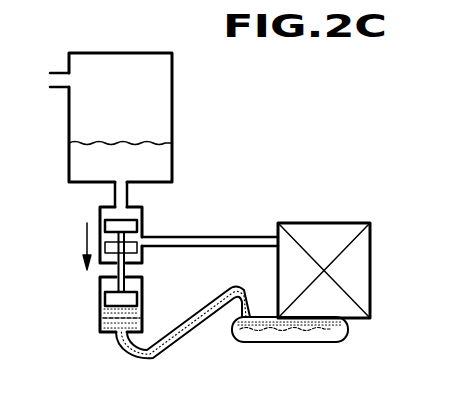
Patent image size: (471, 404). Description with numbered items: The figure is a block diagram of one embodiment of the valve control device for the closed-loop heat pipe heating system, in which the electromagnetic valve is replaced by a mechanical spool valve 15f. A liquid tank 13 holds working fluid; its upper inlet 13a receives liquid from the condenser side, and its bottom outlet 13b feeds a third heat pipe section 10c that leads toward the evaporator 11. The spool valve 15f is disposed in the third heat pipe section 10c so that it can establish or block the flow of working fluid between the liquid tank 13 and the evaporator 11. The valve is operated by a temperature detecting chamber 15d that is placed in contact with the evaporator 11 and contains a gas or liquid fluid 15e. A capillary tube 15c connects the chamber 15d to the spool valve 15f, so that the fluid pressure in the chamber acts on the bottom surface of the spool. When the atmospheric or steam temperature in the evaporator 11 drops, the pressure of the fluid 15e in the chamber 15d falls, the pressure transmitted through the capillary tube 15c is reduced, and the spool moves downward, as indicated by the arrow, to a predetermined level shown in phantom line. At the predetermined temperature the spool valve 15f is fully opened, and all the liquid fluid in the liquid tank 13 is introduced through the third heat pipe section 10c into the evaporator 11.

The liquid tank 13 is at (168, 94).
The upper inlet 13a is at (71, 79).
The bottom outlet 13b is at (122, 177).
The third heat pipe section 10c is at (112, 202).
The mechanical spool valve 15f is at (140, 213).
The gas or liquid fluid 15e is at (100, 312).
The capillary tube 15c is at (183, 345).
The temperature detecting chamber 15d is at (335, 343).
The evaporator 11 is at (340, 227).